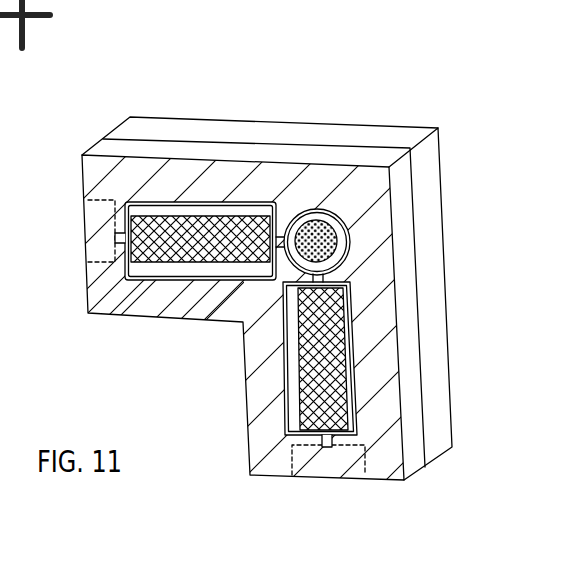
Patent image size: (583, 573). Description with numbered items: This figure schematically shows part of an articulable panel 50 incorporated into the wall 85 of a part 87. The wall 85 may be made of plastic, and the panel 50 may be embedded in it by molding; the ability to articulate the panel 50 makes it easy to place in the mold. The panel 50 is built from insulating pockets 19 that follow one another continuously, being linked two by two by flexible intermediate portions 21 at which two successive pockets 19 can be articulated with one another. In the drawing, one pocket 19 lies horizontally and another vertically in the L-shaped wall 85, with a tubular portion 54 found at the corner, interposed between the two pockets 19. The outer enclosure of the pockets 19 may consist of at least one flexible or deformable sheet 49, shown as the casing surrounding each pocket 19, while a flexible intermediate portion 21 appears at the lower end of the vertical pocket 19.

The insulating pocket 19 is at (92, 230).
The flexible intermediate portion 21 is at (332, 444).
The flexible or deformable sheet 49 is at (90, 312).
The articulable panel 50 is at (215, 203).
The tubular portion 54 is at (338, 218).
The wall 85 is at (380, 272).
The part 87 is at (395, 137).